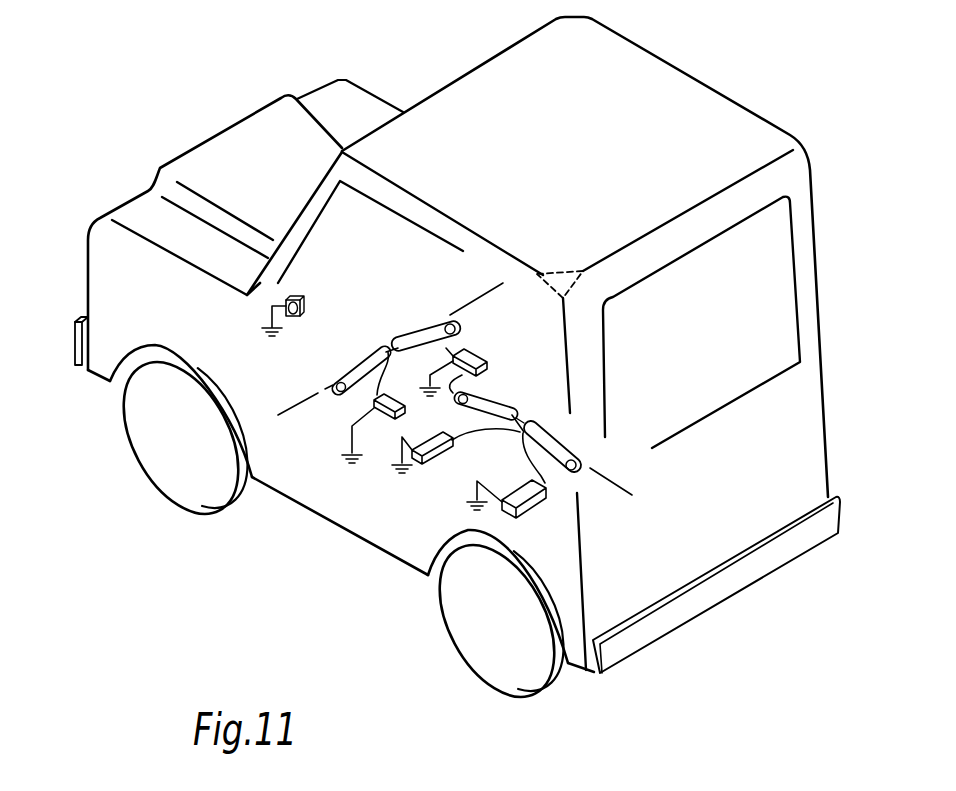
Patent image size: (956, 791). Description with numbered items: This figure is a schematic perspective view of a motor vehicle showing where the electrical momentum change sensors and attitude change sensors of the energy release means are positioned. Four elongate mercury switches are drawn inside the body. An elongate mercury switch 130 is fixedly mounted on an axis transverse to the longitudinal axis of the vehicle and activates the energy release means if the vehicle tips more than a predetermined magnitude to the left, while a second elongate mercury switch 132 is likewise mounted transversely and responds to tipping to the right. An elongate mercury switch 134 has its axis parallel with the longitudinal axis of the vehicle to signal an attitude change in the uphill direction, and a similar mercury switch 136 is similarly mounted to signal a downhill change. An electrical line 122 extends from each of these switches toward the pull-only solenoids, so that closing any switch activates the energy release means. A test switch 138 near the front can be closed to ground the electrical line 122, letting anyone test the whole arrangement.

The electrical line 122 is at (293, 293).
The elongate mercury switch 130 is at (415, 332).
The elongate mercury switch 132 is at (368, 353).
The elongate mercury switch 134 is at (511, 405).
The mercury switch 136 is at (578, 446).
The test switch 138 is at (300, 296).